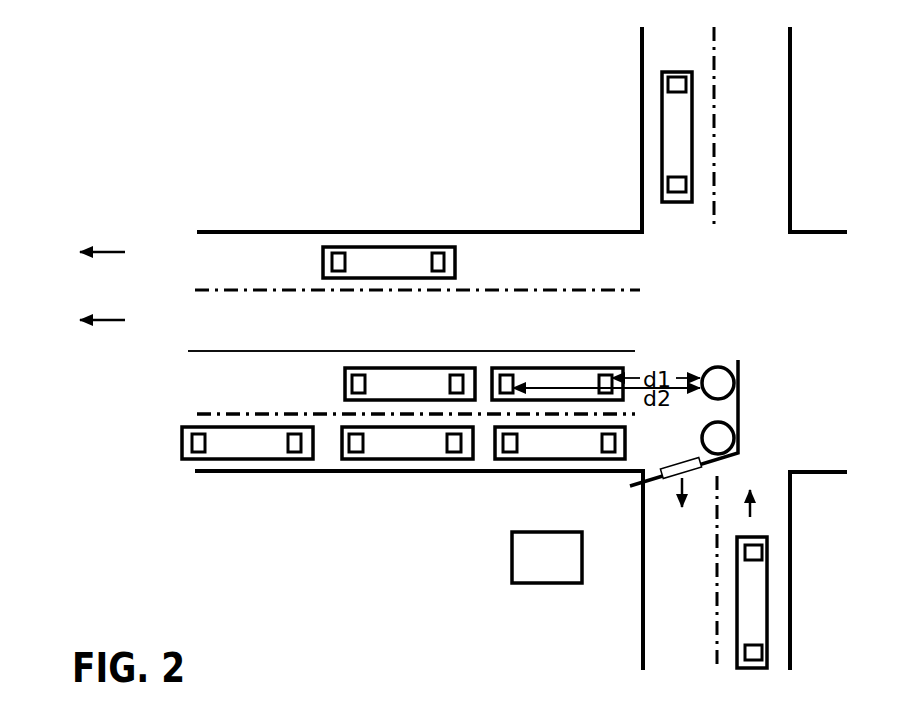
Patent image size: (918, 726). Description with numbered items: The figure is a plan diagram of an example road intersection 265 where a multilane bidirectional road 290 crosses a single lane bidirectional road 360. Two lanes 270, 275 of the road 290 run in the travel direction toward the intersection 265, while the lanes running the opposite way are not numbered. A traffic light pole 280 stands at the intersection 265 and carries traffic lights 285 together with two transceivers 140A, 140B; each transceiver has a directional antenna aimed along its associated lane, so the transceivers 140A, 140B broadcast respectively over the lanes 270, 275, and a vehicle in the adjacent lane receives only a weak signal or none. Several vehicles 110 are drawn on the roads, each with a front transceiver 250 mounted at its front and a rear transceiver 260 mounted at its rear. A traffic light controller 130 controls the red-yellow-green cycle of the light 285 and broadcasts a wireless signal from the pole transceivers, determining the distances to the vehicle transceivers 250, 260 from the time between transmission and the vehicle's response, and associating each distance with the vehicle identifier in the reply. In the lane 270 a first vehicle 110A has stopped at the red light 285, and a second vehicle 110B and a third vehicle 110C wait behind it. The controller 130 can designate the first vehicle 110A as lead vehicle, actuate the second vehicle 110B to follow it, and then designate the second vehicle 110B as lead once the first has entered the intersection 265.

The vehicle 110 is at (545, 370).
The first vehicle 110A is at (560, 443).
The second vehicle 110B is at (407, 443).
The third vehicle 110C is at (247, 443).
The traffic light controller 130 is at (547, 557).
The transceiver 140A is at (738, 427).
The transceiver 140B is at (720, 366).
The front transceiver 250 is at (336, 247).
The rear transceiver 260 is at (437, 247).
The intersection 265 is at (595, 192).
The lane 270 is at (65, 437).
The lane 275 is at (67, 387).
The traffic light pole 280 is at (740, 400).
The traffic light 285 is at (672, 463).
The road 290 is at (137, 478).
The road 360 is at (595, 621).